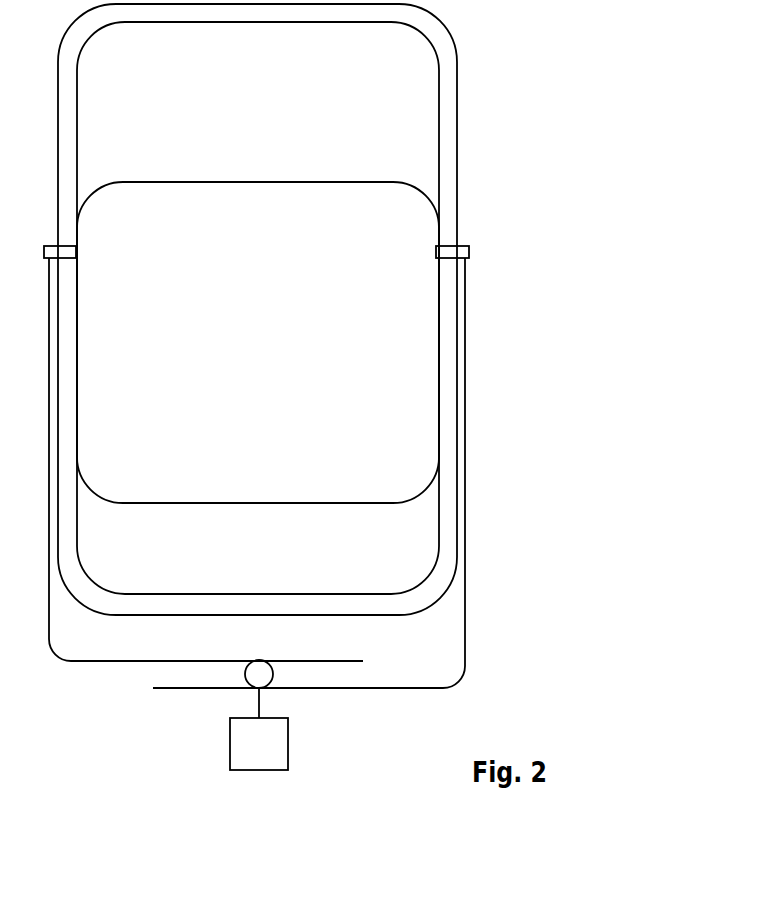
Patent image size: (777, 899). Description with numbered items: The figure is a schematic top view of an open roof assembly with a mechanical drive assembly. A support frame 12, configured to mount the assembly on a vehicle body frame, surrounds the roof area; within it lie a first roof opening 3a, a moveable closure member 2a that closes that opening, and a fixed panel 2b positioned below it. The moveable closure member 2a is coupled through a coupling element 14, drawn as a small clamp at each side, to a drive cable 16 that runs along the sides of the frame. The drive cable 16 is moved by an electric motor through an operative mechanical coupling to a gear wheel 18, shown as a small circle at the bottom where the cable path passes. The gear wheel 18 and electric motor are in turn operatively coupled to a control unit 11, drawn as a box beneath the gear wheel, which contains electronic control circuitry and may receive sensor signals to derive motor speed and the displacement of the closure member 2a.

The moveable closure member 2a is at (266, 380).
The fixed panel 2b is at (268, 573).
The first roof opening 3a is at (272, 123).
The control unit 11 is at (274, 762).
The support frame 12 is at (448, 143).
The coupling element 14 is at (448, 253).
The drive cable 16 is at (466, 349).
The gear wheel 18 is at (253, 673).